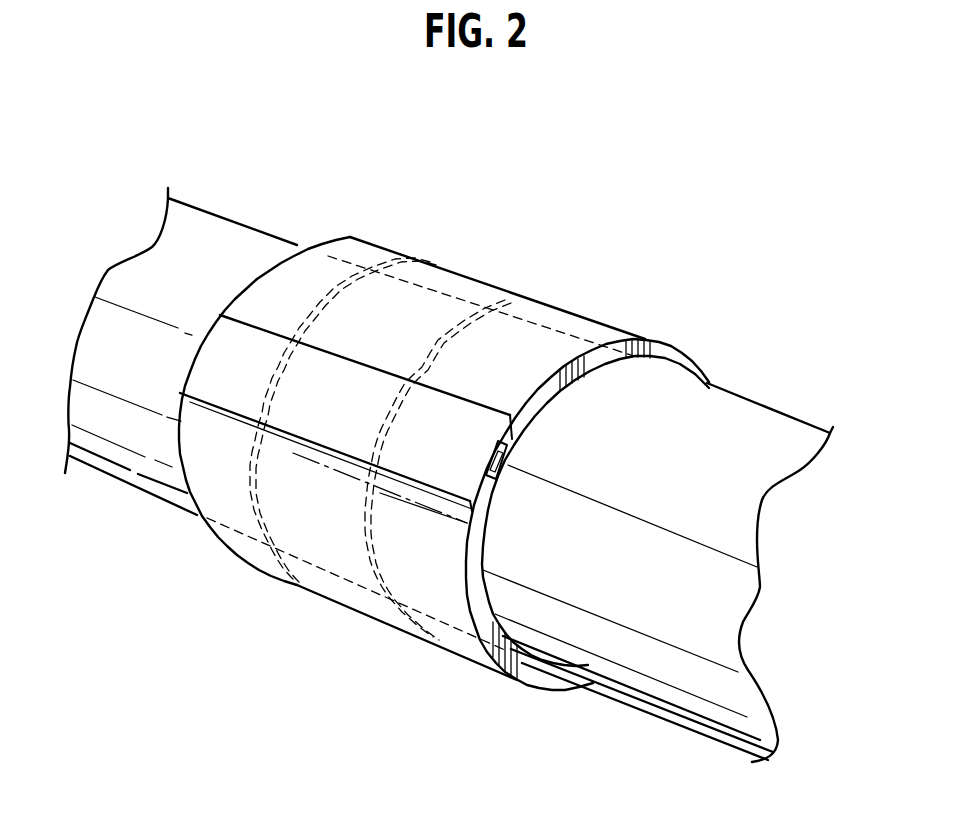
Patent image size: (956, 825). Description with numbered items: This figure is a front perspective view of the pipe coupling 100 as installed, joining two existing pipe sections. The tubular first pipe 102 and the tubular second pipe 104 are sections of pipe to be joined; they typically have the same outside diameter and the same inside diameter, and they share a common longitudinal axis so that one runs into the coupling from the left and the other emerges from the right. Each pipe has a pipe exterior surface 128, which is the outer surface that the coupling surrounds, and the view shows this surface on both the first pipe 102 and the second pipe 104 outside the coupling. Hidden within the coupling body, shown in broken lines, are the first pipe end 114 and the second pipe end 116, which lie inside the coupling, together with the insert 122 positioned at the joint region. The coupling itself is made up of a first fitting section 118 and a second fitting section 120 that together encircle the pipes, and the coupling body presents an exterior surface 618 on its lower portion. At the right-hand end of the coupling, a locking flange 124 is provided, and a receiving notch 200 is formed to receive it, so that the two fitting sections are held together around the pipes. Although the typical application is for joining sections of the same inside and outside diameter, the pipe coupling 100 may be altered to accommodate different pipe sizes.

The pipe coupling 100 is at (491, 211).
The first pipe 102 is at (217, 243).
The second pipe 104 is at (740, 432).
The first pipe end 114 is at (317, 298).
The second pipe end 116 is at (477, 300).
The first fitting section 118 is at (583, 312).
The second fitting section 120 is at (455, 653).
The insert 122 is at (433, 307).
The locking flange 124 is at (472, 499).
The pipe exterior surface 128 is at (205, 285).
The receiving notch 200 is at (505, 470).
The exterior surface 618 is at (331, 518).